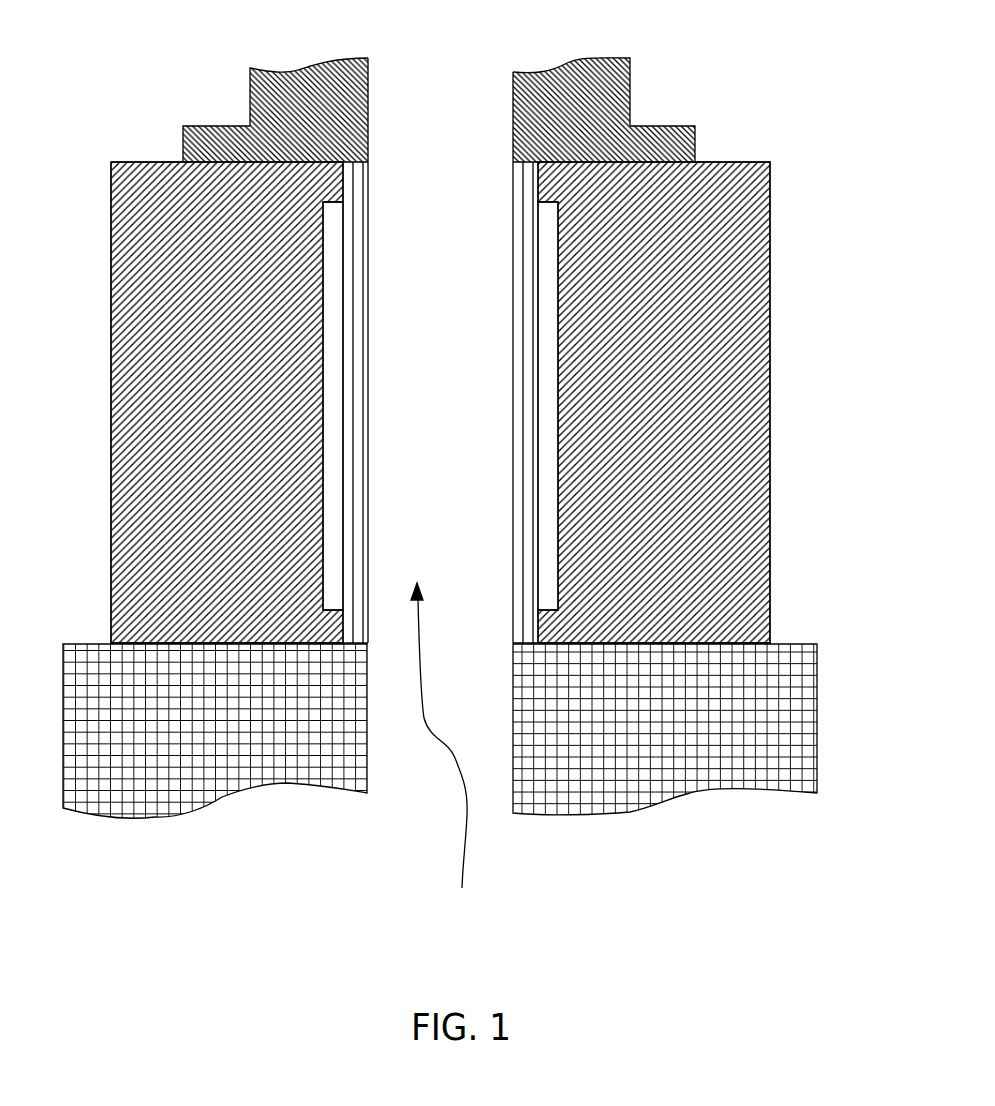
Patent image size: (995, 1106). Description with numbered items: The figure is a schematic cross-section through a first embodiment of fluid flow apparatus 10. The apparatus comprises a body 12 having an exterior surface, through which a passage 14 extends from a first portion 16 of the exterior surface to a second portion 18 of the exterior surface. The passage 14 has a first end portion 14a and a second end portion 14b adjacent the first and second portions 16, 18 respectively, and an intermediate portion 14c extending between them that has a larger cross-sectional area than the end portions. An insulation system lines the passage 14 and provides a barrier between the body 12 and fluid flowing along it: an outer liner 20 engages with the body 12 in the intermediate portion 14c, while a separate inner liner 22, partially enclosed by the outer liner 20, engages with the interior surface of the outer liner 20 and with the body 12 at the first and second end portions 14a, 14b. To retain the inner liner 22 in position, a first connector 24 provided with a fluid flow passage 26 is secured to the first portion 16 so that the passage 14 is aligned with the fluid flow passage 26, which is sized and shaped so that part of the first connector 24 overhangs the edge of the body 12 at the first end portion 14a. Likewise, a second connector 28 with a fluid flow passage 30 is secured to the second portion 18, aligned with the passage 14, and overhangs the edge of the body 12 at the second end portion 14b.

The fluid flow apparatus 10 is at (447, 474).
The body 12 is at (733, 192).
The passage 14 is at (440, 753).
The first end portion 14a is at (395, 190).
The second end portion 14b is at (382, 628).
The intermediate portion 14c is at (465, 465).
The first portion 16 is at (697, 160).
The second portion 18 is at (283, 644).
The outer liner 20 is at (545, 320).
The inner liner 22 is at (527, 623).
The first connector 24 is at (270, 105).
The fluid flow passage 26 is at (440, 132).
The second connector 28 is at (585, 762).
The fluid flow passage 30 is at (474, 737).